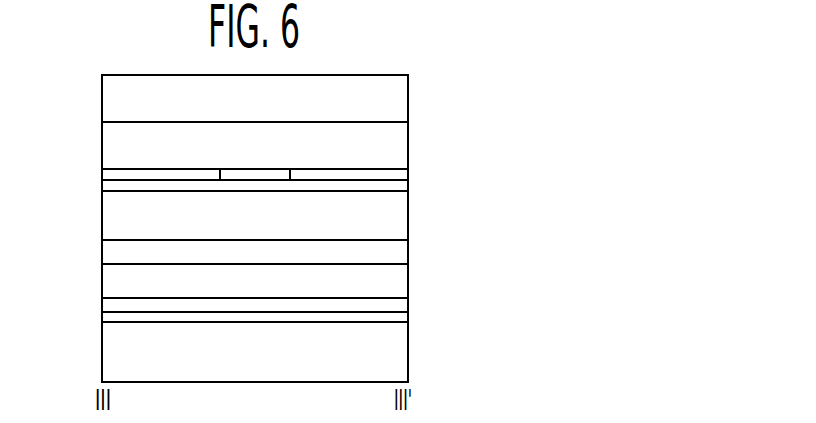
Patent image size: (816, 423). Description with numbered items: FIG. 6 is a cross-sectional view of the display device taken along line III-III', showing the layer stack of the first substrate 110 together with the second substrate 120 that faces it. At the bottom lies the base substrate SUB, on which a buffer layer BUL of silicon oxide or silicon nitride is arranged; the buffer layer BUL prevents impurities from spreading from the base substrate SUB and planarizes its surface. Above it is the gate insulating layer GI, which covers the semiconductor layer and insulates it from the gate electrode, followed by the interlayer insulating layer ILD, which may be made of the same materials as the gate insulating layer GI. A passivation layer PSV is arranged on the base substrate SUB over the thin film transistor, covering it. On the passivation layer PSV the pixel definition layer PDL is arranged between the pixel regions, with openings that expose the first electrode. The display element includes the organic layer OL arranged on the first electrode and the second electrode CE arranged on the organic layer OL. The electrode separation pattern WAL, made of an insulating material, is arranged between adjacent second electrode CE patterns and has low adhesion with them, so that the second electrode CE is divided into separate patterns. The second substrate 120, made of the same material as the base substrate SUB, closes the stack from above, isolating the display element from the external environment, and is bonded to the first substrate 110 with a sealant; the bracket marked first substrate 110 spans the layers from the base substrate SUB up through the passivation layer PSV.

The second substrate 120 is at (400, 106).
The electrode separation pattern WAL is at (254, 176).
The second electrode CE is at (396, 175).
The organic layer OL is at (396, 186).
The pixel definition layer PDL is at (393, 218).
The passivation layer PSV is at (400, 257).
The interlayer insulating layer ILD is at (400, 282).
The gate insulating layer GI is at (400, 305).
The buffer layer BUL is at (400, 318).
The base substrate SUB is at (400, 367).
The first substrate 110 is at (100, 240).